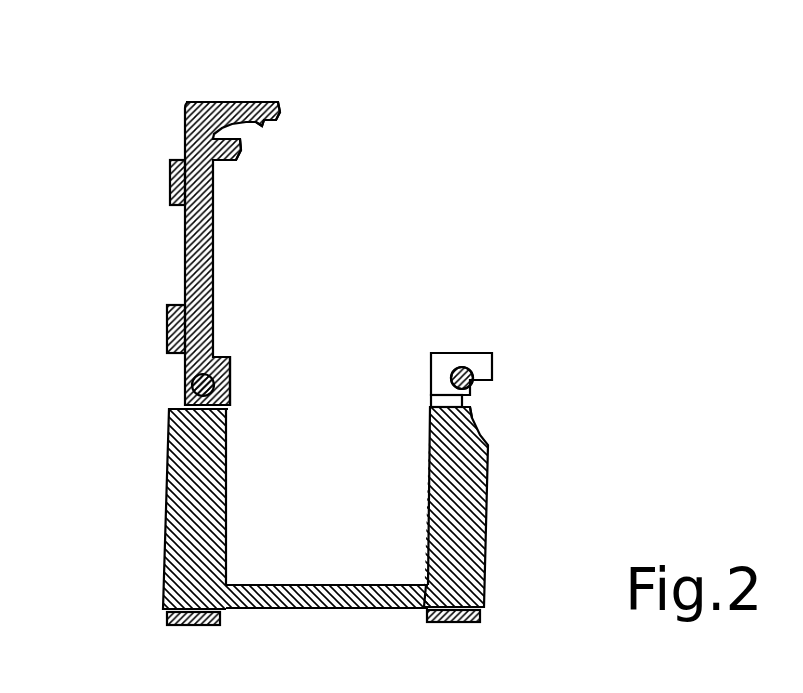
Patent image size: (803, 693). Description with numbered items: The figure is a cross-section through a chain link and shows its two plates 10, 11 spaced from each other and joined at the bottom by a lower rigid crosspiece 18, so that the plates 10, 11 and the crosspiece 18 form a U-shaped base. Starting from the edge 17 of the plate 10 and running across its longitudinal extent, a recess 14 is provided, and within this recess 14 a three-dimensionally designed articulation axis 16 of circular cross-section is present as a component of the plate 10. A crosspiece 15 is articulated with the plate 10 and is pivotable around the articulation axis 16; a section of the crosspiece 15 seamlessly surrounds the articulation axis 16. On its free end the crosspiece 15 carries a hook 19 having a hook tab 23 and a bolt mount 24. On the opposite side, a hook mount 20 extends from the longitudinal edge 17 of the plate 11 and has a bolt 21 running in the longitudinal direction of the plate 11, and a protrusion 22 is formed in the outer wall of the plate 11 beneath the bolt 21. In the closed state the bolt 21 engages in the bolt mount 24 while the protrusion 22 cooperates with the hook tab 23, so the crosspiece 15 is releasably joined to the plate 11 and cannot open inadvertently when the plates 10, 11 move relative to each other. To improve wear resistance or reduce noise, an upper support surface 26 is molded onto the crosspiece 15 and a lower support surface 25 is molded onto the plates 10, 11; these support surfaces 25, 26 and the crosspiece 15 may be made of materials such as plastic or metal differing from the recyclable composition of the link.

The plate 10 is at (167, 519).
The plate 11 is at (490, 522).
The recess 14 is at (238, 408).
The crosspiece 15 is at (183, 268).
The articulation axis 16 is at (210, 383).
The edge 17 is at (230, 358).
The lower rigid crosspiece 18 is at (322, 585).
The hook 19 is at (197, 102).
The hook mount 20 is at (492, 368).
The bolt 21 is at (458, 355).
The protrusion 22 is at (474, 413).
The hook tab 23 is at (258, 128).
The bolt mount 24 is at (250, 102).
The lower support surface 25 is at (425, 618).
The upper support surface 26 is at (170, 175).